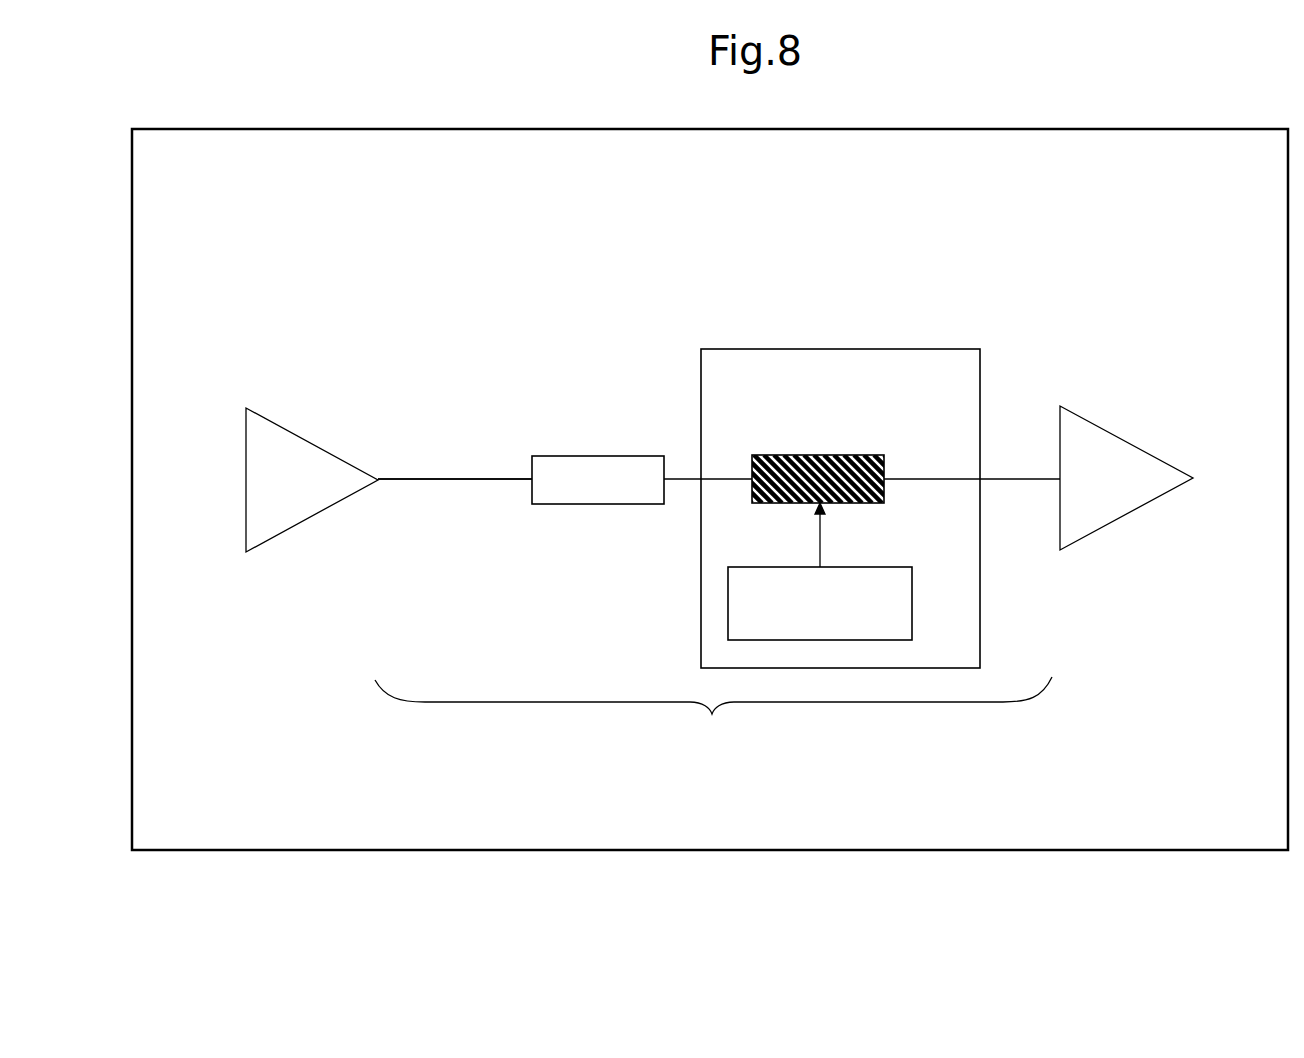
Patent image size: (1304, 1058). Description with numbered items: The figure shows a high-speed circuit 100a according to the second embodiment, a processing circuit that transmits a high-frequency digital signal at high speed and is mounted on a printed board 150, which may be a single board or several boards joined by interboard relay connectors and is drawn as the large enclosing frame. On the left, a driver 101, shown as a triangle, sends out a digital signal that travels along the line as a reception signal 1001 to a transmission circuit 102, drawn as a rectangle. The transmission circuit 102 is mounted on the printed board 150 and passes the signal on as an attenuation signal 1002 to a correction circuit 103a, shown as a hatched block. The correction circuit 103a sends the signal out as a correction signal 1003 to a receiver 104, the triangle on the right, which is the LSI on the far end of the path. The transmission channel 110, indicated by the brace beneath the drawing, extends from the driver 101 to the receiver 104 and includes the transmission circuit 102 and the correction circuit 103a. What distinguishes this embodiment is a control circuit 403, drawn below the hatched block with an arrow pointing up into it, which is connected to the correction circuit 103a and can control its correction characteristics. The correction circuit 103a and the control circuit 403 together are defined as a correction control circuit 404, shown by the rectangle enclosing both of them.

The printed board 150 is at (985, 127).
The high-speed circuit 100a is at (933, 220).
The driver 101 is at (245, 440).
The reception signal 1001 is at (430, 479).
The transmission circuit 102 is at (550, 456).
The attenuation signal 1002 is at (690, 479).
The correction circuit 103a is at (775, 455).
The correction signal 1003 is at (997, 479).
The receiver 104 is at (1077, 413).
The control circuit 403 is at (828, 567).
The correction control circuit 404 is at (980, 650).
The transmission channel 110 is at (712, 714).